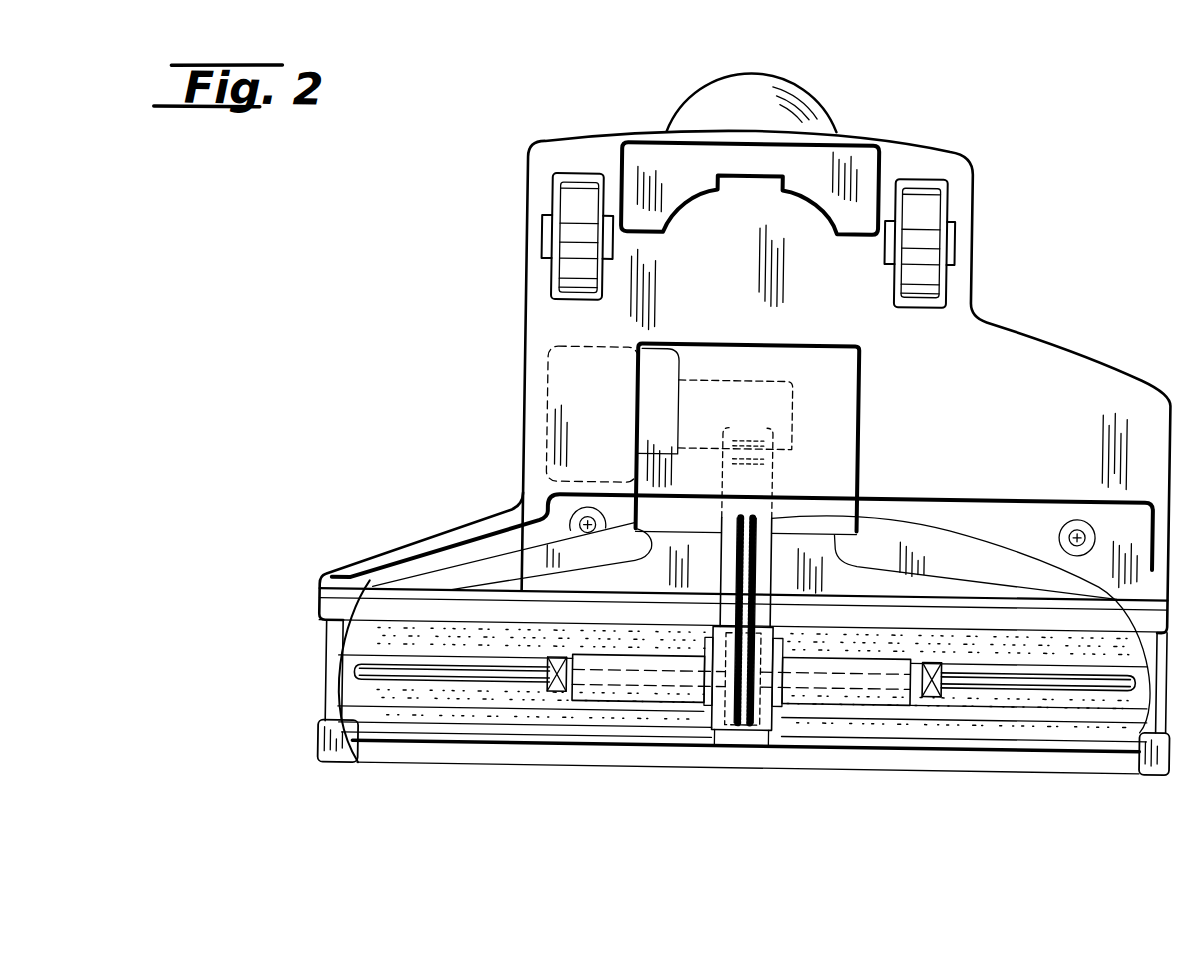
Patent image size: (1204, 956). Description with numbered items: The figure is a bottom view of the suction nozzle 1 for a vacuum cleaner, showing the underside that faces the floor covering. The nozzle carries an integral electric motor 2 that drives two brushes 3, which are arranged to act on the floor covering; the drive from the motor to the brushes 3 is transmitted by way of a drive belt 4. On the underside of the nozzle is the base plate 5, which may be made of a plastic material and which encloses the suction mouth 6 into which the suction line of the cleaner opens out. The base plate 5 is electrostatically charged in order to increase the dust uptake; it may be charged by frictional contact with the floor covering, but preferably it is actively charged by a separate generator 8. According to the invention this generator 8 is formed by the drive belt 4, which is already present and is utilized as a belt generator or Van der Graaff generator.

The suction nozzle 1 is at (1003, 160).
The electric motor 2 is at (600, 377).
The brushes 3 is at (576, 715).
The drive belt 4 is at (758, 545).
The base plate 5 is at (1156, 751).
The suction mouth 6 is at (666, 723).
The generator 8 is at (754, 643).